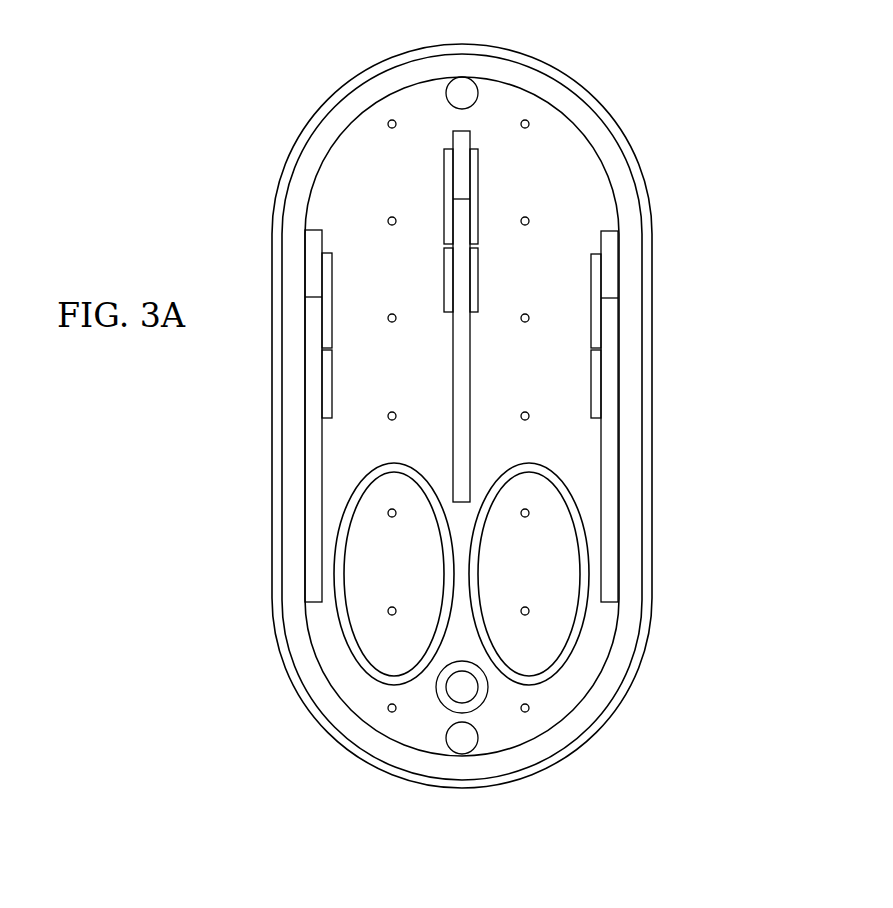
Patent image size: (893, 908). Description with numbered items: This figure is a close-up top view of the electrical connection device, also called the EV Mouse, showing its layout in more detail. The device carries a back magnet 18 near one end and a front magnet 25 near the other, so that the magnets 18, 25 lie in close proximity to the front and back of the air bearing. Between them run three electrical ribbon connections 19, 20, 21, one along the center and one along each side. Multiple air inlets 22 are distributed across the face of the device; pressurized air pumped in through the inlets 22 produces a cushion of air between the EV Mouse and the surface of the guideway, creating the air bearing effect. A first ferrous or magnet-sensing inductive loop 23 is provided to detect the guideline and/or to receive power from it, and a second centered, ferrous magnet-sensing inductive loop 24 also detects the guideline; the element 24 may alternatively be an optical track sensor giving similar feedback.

The back magnet 18 is at (452, 88).
The electrical ribbon connection 19 is at (457, 172).
The electrical ribbon connection 20 is at (609, 271).
The electrical ribbon connection 21 is at (309, 273).
The air inlets 22 is at (529, 123).
The first ferrous or magnet-sensing inductive loop 23 is at (573, 632).
The second centered inductive loop 24 is at (442, 692).
The front magnet 25 is at (473, 738).